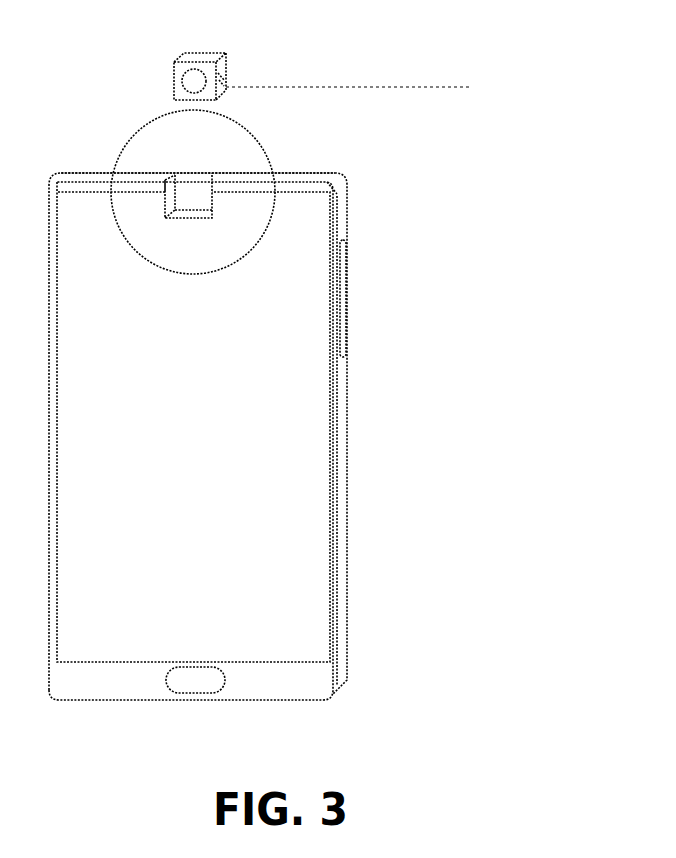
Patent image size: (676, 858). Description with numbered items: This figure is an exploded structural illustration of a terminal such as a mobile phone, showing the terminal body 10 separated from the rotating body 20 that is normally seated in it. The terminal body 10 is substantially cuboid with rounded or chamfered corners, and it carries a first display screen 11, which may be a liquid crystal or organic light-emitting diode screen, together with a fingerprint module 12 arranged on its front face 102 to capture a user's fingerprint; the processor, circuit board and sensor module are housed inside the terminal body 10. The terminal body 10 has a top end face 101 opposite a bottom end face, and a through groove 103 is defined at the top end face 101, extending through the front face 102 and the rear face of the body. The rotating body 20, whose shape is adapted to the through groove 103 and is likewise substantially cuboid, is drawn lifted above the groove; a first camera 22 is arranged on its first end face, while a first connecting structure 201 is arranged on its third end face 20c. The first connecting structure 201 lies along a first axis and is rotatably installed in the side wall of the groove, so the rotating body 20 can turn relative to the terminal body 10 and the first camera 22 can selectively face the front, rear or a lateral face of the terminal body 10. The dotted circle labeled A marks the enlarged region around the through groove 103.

The terminal body 10 is at (314, 686).
The first display screen 11 is at (314, 466).
The fingerprint module 12 is at (197, 676).
The rotating body 20 is at (192, 54).
The first camera 22 is at (197, 81).
The first connecting structure 201 is at (225, 64).
The third end face 20c is at (372, 87).
The top end face 101 is at (314, 184).
The front face 102 is at (314, 291).
The through groove 103 is at (186, 192).
The enlarged region A is at (269, 154).